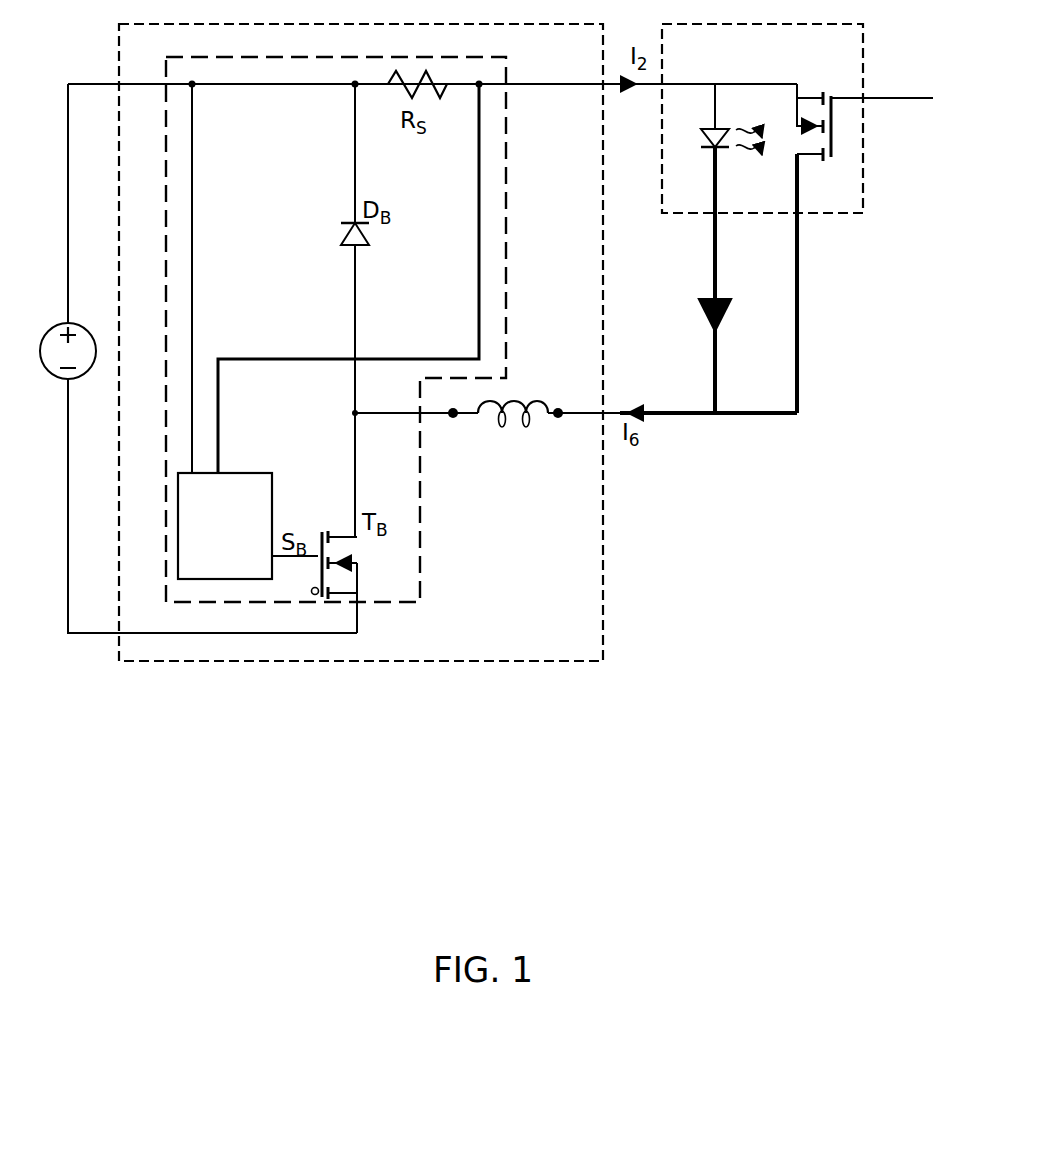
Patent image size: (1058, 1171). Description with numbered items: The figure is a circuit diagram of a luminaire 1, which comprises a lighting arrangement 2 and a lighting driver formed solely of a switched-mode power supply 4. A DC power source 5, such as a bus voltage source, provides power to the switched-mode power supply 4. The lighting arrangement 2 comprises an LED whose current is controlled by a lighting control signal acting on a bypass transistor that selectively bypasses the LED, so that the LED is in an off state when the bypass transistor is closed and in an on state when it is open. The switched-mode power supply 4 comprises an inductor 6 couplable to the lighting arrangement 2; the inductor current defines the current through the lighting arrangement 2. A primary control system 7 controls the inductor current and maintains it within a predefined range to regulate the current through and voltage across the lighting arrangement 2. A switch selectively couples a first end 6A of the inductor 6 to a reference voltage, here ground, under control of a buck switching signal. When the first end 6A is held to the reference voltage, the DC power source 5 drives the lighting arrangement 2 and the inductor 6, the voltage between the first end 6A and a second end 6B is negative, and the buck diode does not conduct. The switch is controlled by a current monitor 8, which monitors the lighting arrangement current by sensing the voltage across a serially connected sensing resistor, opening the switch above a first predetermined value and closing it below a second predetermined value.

The luminaire 1 is at (307, 801).
The lighting arrangement 2 is at (808, 214).
The switched-mode power supply 4 is at (557, 662).
The DC power source 5 is at (43, 348).
The inductor 6 is at (511, 442).
The first end of the inductor 6A is at (452, 425).
The second end of the inductor 6B is at (558, 429).
The primary control system 7 is at (422, 548).
The current monitor 8 is at (225, 526).